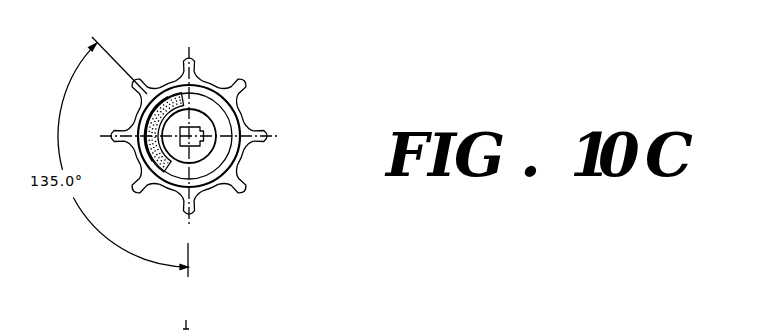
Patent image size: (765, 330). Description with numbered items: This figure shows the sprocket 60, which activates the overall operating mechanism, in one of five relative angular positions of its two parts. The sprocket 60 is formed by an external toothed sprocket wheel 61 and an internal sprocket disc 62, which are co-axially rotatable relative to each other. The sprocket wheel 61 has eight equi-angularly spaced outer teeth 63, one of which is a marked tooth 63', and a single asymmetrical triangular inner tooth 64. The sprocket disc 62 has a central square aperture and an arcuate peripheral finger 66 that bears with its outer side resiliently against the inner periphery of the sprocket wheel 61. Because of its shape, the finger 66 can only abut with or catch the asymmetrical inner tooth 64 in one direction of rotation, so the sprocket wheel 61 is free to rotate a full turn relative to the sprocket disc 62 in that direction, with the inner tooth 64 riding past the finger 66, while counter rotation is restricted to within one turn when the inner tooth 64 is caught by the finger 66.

The sprocket 60 is at (272, 238).
The sprocket wheel 61 is at (213, 78).
The sprocket disc 62 is at (223, 125).
The outer teeth 63 is at (202, 137).
The marked tooth 63' is at (138, 205).
The inner tooth 64 is at (199, 191).
The finger 66 is at (158, 107).